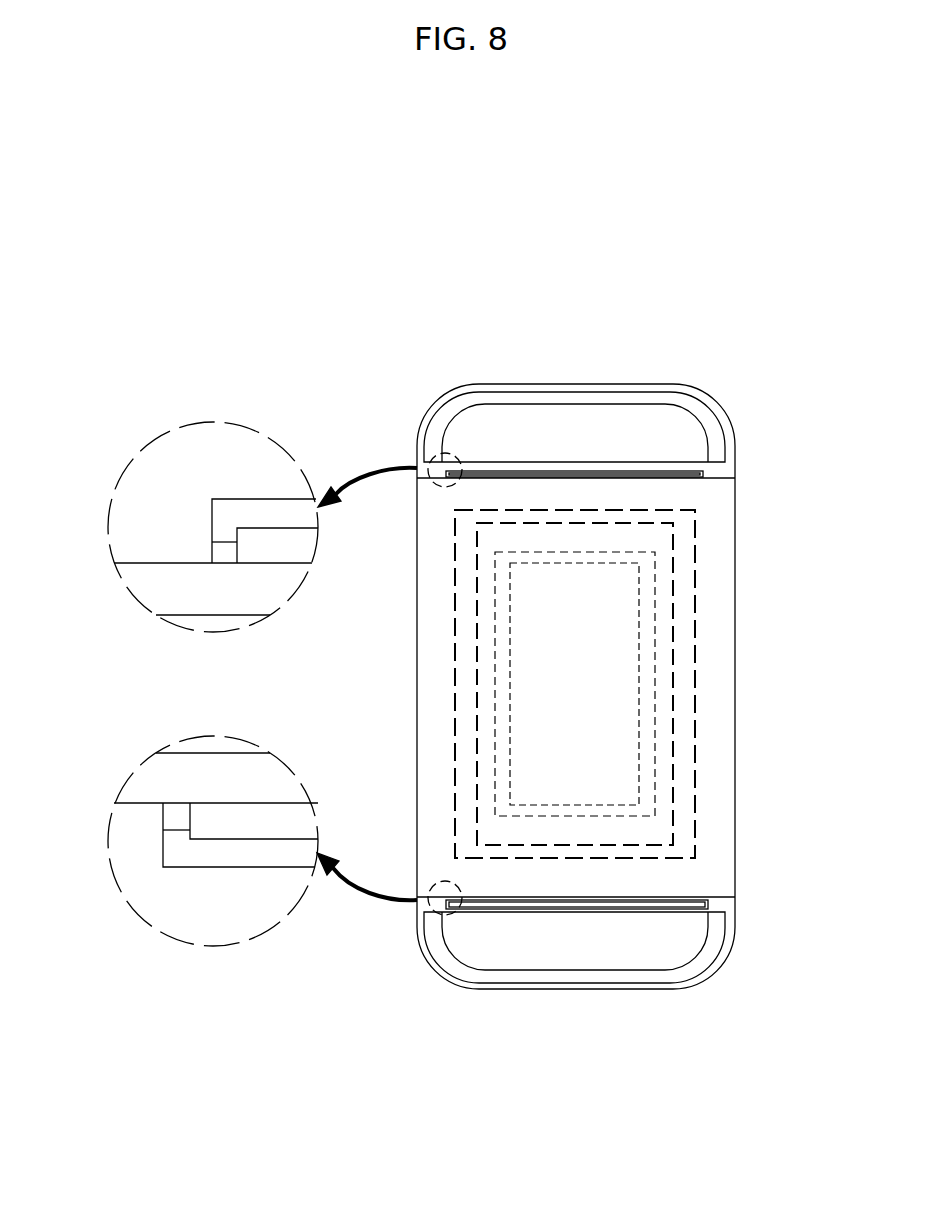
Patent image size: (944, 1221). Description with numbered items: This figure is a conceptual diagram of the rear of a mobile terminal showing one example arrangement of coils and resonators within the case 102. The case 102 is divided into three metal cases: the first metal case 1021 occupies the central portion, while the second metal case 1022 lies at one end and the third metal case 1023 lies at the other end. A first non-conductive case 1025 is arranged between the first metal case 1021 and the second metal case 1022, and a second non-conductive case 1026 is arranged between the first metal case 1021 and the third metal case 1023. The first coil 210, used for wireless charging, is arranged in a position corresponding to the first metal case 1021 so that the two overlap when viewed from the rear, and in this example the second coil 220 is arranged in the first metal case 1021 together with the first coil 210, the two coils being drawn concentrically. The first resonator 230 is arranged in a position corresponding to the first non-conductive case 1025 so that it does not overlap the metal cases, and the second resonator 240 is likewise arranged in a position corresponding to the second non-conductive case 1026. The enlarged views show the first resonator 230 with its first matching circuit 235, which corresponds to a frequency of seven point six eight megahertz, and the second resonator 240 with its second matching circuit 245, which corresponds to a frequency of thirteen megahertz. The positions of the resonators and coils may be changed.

The case 102 is at (455, 684).
The first metal case 1021 is at (700, 497).
The second metal case 1022 is at (698, 433).
The third metal case 1023 is at (693, 945).
The first non-conductive case 1025 is at (703, 467).
The second non-conductive case 1026 is at (700, 893).
The first coil 210 is at (695, 570).
The second coil 220 is at (655, 690).
The first resonator 230 is at (630, 470).
The first matching circuit 235 is at (218, 553).
The second resonator 240 is at (632, 905).
The second matching circuit 245 is at (165, 817).